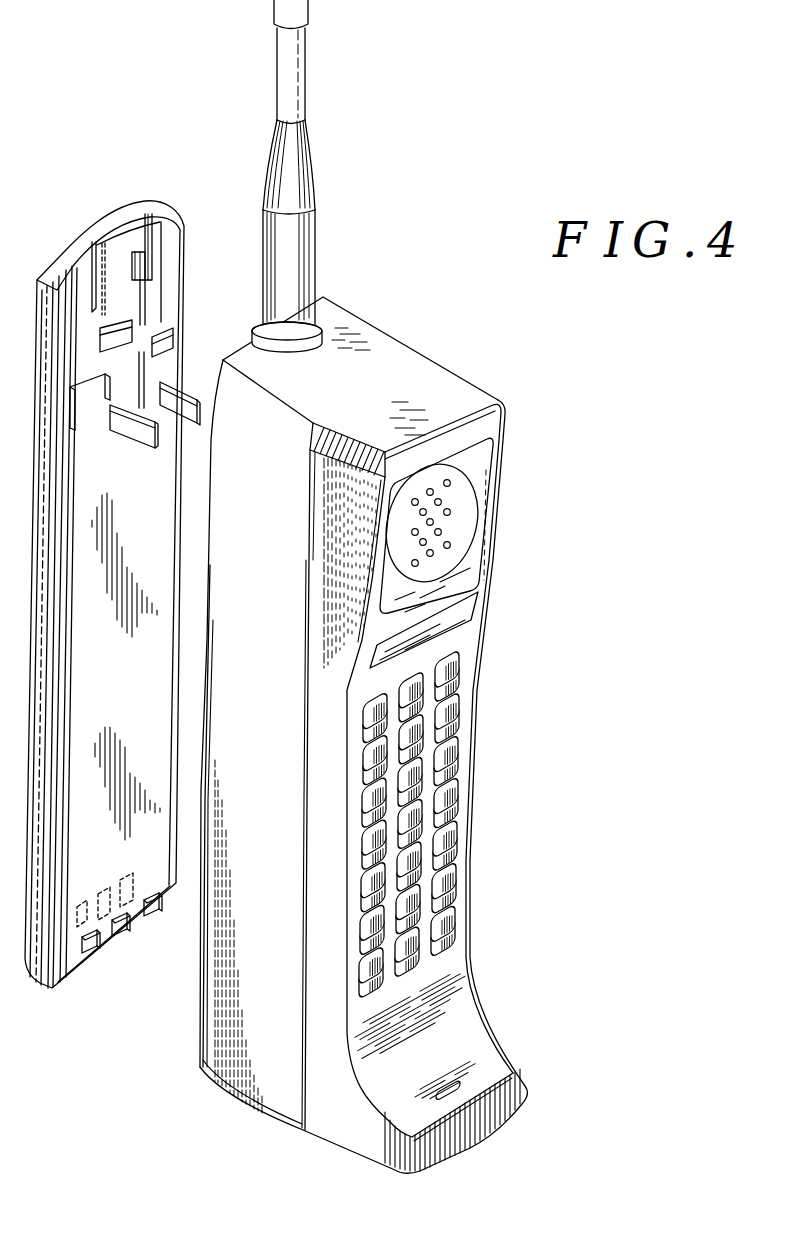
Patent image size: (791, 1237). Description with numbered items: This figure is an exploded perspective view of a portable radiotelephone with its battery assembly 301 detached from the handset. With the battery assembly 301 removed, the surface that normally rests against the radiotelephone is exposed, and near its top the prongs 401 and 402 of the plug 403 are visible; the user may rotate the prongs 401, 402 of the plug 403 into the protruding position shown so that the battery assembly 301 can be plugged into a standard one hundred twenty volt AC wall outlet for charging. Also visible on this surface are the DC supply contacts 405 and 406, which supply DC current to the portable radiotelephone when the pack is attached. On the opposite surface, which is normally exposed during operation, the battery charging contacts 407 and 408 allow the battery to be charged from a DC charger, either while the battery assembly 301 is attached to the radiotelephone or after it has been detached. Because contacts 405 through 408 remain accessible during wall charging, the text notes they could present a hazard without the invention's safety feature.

The battery assembly 301 is at (53, 261).
The prong 401 is at (198, 383).
The prong 402 is at (149, 414).
The plug 403 is at (190, 296).
The DC supply contact 405 is at (157, 913).
The DC supply contact 406 is at (96, 953).
The battery charging contact 407 is at (133, 882).
The battery charging contact 408 is at (78, 928).